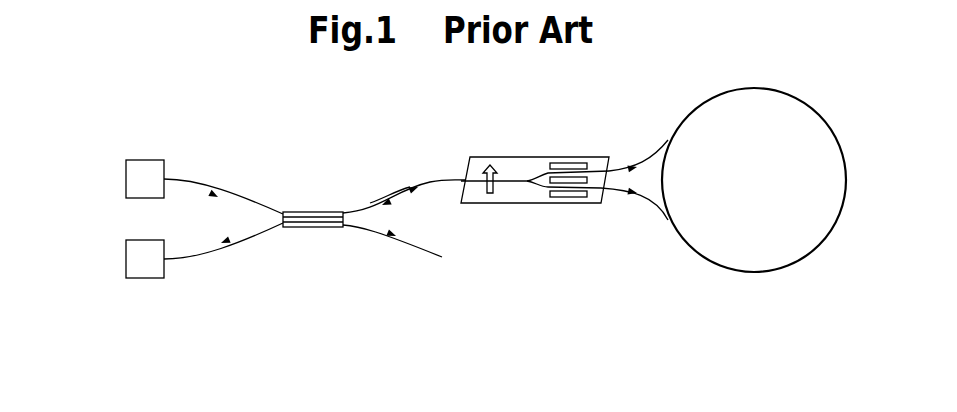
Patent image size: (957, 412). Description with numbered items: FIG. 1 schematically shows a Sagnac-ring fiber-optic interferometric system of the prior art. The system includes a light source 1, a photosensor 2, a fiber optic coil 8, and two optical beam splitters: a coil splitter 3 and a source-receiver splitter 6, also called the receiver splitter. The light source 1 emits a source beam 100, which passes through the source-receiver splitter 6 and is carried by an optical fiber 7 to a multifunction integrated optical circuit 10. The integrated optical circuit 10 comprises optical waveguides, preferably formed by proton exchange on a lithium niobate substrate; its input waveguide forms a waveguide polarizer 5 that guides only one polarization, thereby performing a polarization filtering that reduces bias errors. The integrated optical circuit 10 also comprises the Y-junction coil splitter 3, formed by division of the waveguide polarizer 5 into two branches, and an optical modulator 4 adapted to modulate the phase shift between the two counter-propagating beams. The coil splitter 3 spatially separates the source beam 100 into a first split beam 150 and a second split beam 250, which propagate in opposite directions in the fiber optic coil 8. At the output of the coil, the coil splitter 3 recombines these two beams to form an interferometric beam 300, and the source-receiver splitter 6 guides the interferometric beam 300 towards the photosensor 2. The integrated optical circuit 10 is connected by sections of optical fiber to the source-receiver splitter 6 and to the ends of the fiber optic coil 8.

The light source 1 is at (126, 180).
The photosensor 2 is at (126, 260).
The source beam 100 is at (216, 195).
The interferometric beam 300 is at (222, 247).
The optical fiber 7 is at (392, 200).
The source-receiver splitter 6 is at (315, 227).
The multifunction integrated optical circuit 10 is at (530, 157).
The waveguide polarizer 5 is at (496, 163).
The coil splitter 3 is at (527, 183).
The optical modulator 4 is at (567, 197).
The first split beam 150 is at (635, 165).
The second split beam 250 is at (635, 195).
The fiber optic coil 8 is at (840, 155).